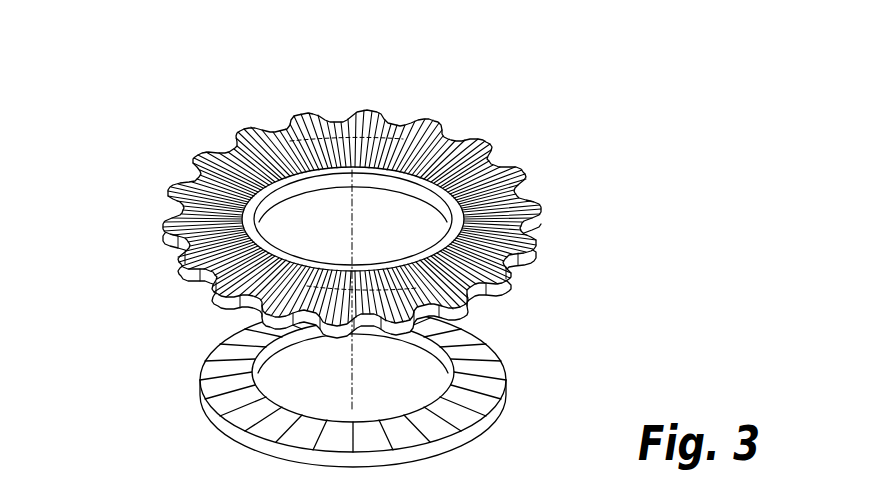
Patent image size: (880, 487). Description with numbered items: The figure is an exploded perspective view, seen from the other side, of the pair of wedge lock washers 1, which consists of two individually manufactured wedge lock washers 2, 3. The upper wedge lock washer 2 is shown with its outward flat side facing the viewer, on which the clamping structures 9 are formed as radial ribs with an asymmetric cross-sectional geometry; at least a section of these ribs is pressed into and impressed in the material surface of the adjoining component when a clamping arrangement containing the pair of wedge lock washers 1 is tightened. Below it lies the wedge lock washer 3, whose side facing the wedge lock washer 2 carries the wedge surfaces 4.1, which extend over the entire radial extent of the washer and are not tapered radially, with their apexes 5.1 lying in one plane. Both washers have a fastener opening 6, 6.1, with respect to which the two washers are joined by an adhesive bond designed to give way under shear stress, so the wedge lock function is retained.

The pair of wedge lock washers 1 is at (578, 268).
The wedge lock washer 2 is at (522, 162).
The wedge lock washer 3 is at (518, 380).
The wedge surfaces 4.1 is at (482, 342).
The apexes 5.1 is at (347, 421).
The fastener opening 6 is at (337, 183).
The fastener opening 6.1 is at (353, 360).
The clamping structures 9 is at (279, 125).